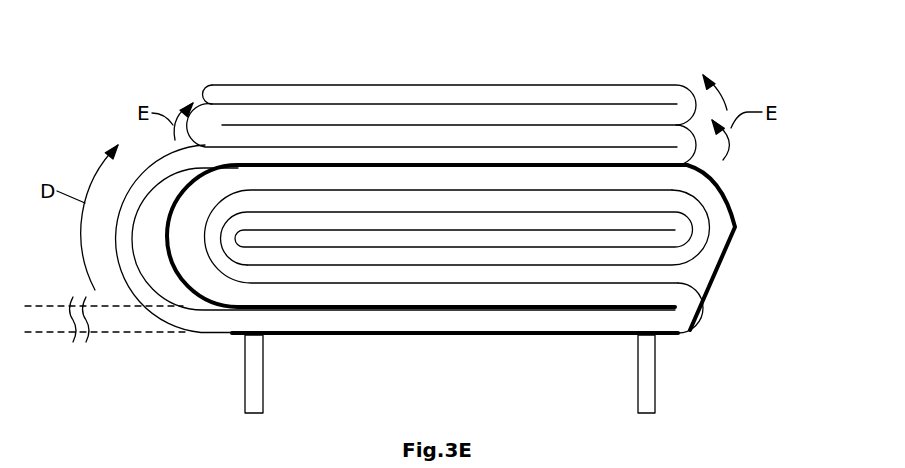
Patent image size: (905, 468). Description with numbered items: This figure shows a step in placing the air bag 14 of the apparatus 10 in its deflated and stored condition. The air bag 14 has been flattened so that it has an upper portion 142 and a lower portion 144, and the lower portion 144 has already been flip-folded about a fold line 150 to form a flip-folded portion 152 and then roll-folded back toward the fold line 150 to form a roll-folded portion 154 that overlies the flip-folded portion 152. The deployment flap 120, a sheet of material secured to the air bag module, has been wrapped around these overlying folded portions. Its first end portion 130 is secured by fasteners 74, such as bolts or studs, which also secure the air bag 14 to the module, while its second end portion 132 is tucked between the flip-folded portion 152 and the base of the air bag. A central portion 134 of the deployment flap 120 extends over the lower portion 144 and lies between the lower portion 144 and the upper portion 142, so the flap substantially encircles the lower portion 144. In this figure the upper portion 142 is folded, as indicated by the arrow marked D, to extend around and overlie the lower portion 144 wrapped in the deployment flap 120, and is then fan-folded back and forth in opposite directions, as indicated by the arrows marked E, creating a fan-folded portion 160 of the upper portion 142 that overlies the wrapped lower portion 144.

The apparatus 10 is at (160, 44).
The air bag 14 is at (305, 135).
The fasteners 74 is at (250, 387).
The deployment flap 120 is at (715, 278).
The first end portion 130 is at (412, 335).
The second end portion 132 is at (562, 308).
The central portion 134 is at (473, 163).
The upper portion 142 is at (372, 113).
The lower portion 144 is at (488, 223).
The fold line 150 is at (687, 312).
The flip-folded portion 152 is at (485, 290).
The roll-folded portion 154 is at (547, 220).
The fan-folded portion 160 is at (450, 115).